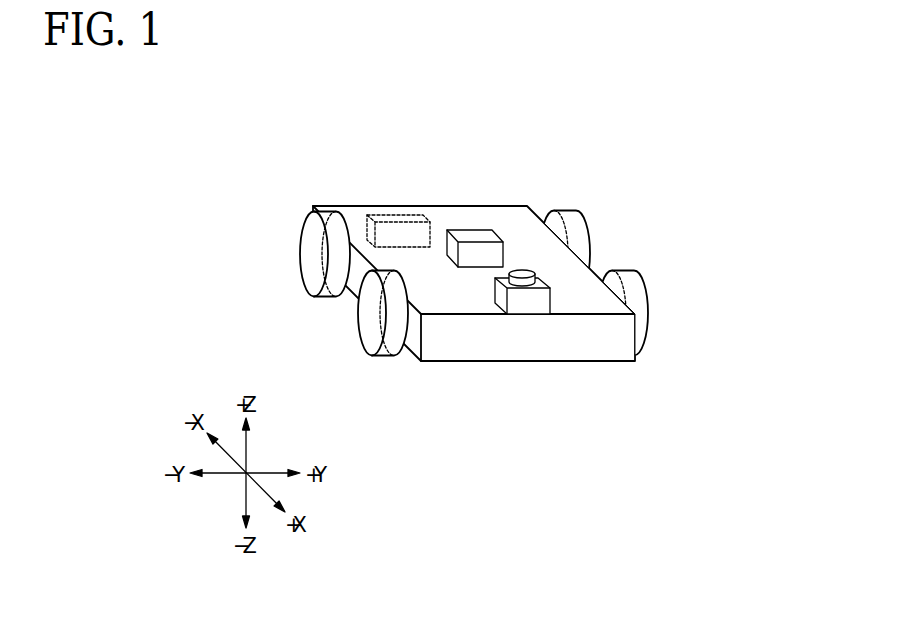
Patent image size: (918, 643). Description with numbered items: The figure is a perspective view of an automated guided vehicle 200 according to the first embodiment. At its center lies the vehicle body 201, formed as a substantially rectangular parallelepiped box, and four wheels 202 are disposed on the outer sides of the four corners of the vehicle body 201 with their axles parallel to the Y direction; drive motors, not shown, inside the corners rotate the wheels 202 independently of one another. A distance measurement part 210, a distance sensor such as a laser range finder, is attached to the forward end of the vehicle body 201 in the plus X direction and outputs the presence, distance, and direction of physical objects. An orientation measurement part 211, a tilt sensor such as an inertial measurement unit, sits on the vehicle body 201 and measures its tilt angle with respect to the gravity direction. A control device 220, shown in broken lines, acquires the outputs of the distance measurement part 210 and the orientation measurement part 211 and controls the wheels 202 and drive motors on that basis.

The automated guided vehicle 200 is at (339, 170).
The vehicle body 201 is at (528, 337).
The wheels 202 is at (315, 255).
The distance measurement part 210 is at (550, 306).
The orientation measurement part 211 is at (503, 255).
The control device 220 is at (395, 213).